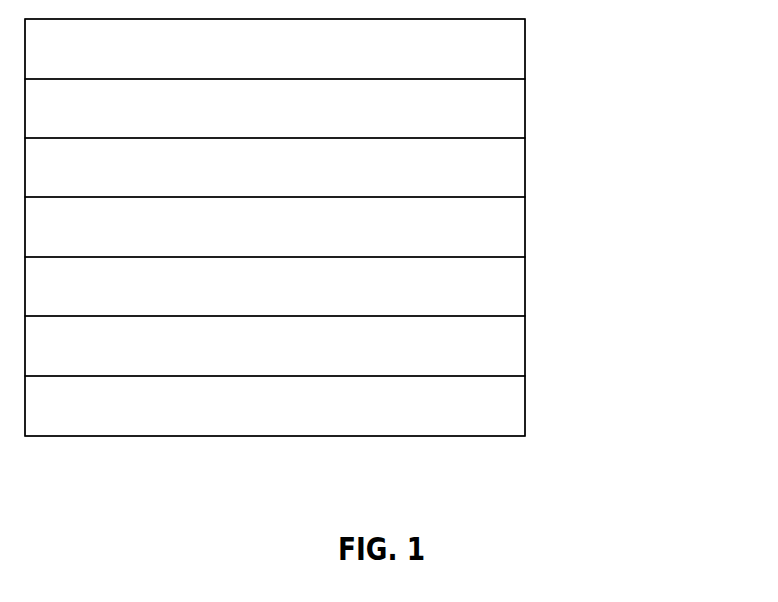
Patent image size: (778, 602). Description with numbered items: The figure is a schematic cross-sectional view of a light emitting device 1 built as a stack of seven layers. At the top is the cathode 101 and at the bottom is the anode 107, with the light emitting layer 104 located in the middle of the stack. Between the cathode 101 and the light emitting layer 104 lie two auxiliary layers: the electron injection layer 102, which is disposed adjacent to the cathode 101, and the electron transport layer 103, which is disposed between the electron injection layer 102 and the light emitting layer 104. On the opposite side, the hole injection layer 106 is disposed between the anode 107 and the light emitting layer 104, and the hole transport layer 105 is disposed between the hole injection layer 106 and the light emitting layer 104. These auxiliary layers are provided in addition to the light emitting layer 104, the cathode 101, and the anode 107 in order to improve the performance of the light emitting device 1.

The light emitting device 1 is at (590, 268).
The cathode 101 is at (525, 48).
The electron injection layer 102 is at (525, 108).
The electron transport layer 103 is at (525, 168).
The light emitting layer 104 is at (525, 228).
The hole transport layer 105 is at (525, 287).
The hole injection layer 106 is at (525, 344).
The anode 107 is at (525, 408).